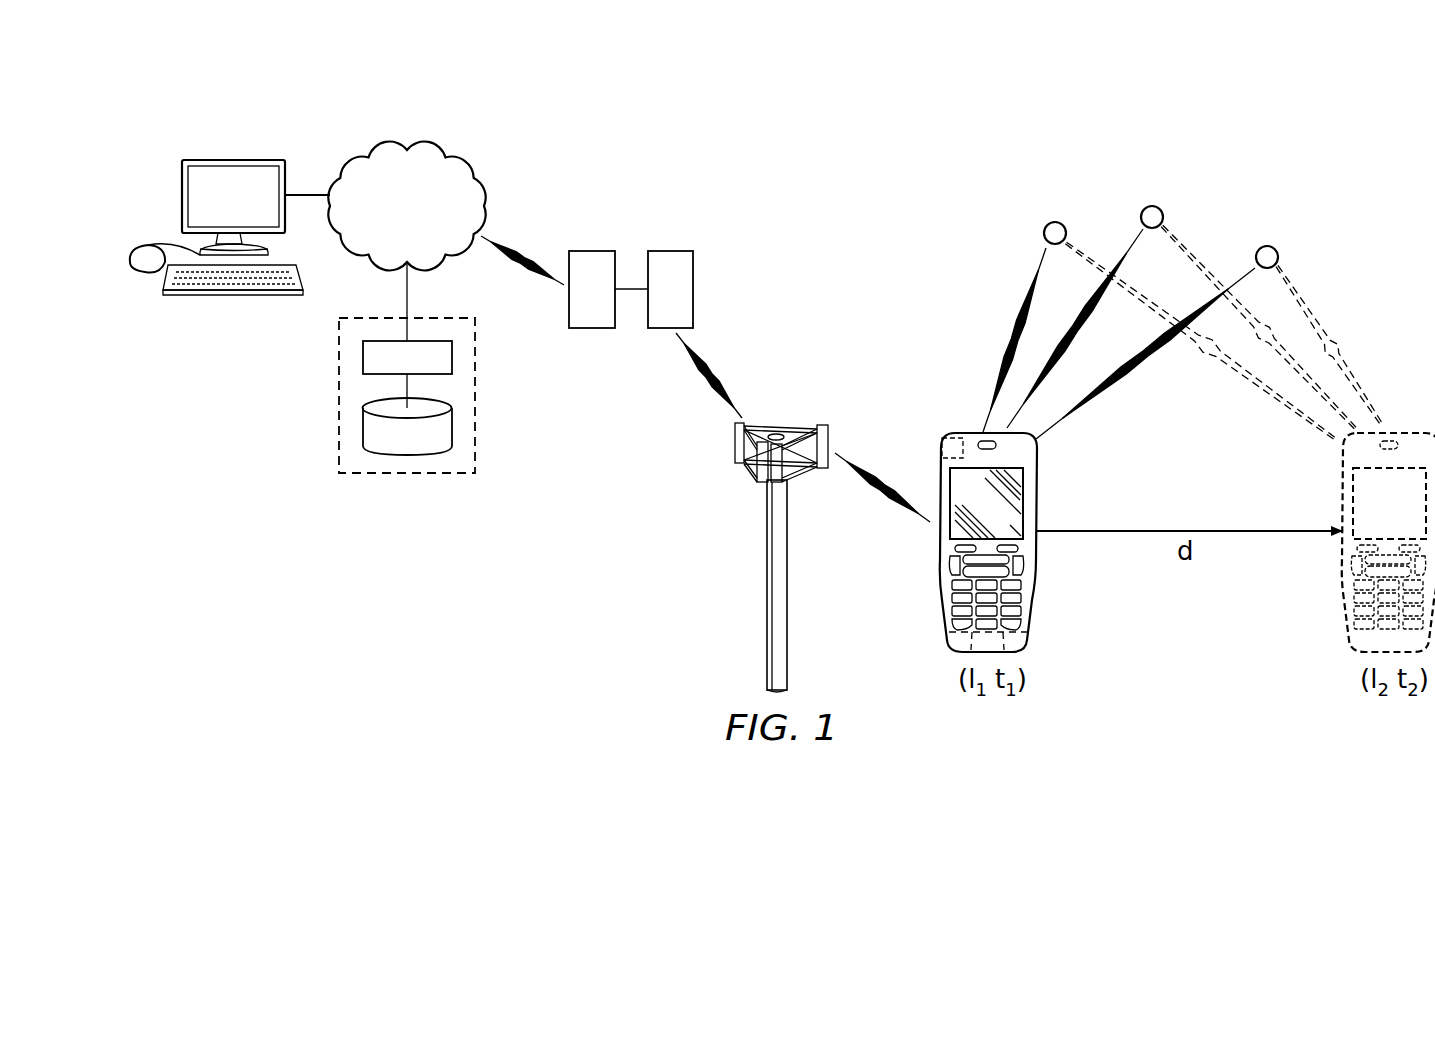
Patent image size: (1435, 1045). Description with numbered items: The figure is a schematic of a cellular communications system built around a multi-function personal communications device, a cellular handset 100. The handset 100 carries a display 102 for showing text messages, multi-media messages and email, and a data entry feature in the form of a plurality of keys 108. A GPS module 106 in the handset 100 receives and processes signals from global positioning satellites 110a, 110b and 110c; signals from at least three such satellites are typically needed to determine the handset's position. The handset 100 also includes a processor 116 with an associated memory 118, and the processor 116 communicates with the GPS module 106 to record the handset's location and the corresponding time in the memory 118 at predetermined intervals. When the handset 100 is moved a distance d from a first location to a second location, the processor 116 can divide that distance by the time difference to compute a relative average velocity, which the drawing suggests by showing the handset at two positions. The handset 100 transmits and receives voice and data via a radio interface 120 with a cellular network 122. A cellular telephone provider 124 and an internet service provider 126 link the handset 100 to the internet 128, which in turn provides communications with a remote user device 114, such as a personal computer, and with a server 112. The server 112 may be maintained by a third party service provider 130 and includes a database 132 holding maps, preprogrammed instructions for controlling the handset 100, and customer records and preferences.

The cellular handset 100 is at (940, 580).
The display 102 is at (1020, 514).
The GPS module 106 is at (941, 444).
The keys 108 is at (1022, 581).
The global positioning satellite 110a is at (1052, 222).
The global positioning satellite 110b is at (1155, 206).
The global positioning satellite 110c is at (1269, 246).
The server 112 is at (363, 357).
The remote user device 114 is at (233, 159).
The processor 116 is at (1028, 650).
The memory 118 is at (945, 650).
The radio interface 120 is at (891, 500).
The cellular network 122 is at (703, 475).
The cellular telephone provider 124 is at (669, 251).
The internet service provider 126 is at (592, 251).
The internet 128 is at (428, 221).
The third party service provider 130 is at (488, 410).
The database 132 is at (363, 426).